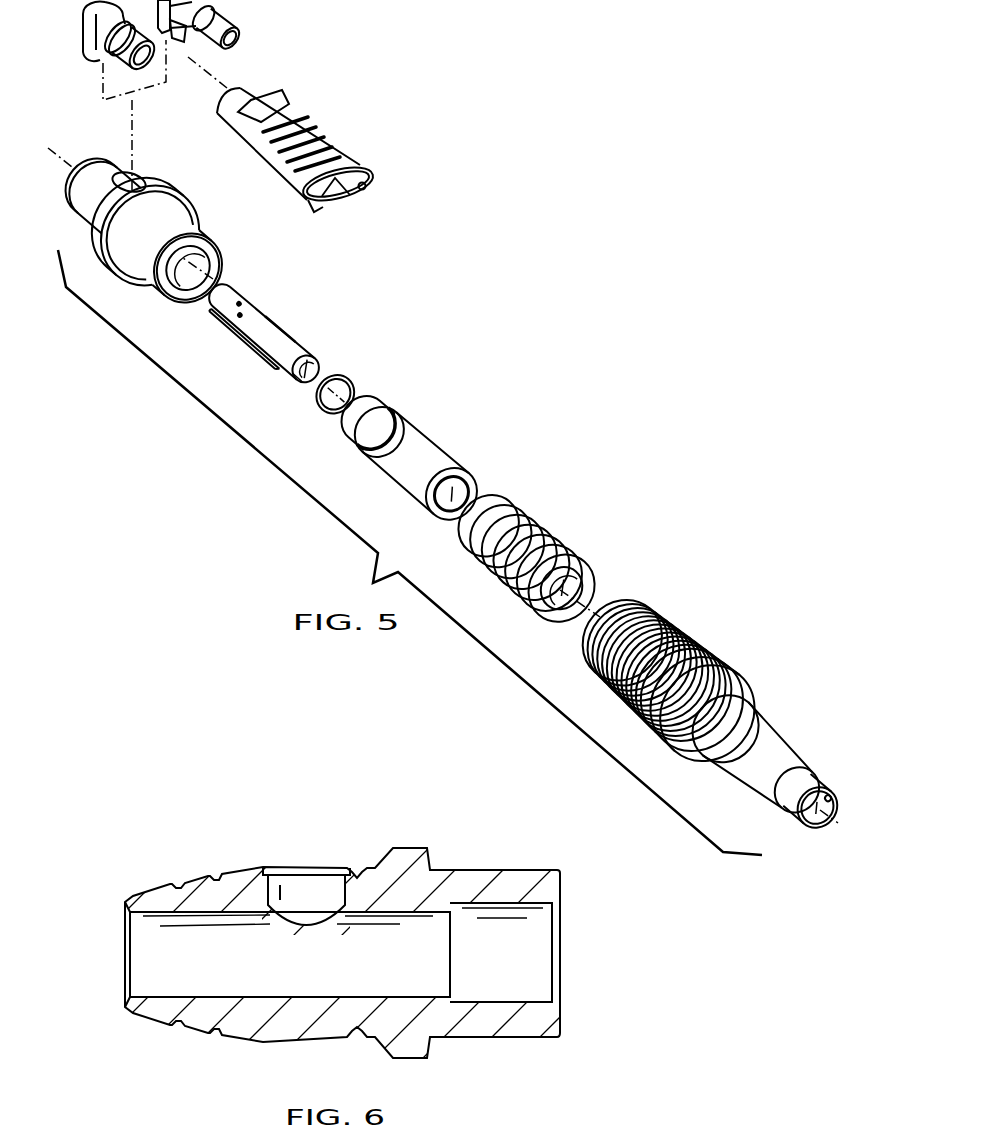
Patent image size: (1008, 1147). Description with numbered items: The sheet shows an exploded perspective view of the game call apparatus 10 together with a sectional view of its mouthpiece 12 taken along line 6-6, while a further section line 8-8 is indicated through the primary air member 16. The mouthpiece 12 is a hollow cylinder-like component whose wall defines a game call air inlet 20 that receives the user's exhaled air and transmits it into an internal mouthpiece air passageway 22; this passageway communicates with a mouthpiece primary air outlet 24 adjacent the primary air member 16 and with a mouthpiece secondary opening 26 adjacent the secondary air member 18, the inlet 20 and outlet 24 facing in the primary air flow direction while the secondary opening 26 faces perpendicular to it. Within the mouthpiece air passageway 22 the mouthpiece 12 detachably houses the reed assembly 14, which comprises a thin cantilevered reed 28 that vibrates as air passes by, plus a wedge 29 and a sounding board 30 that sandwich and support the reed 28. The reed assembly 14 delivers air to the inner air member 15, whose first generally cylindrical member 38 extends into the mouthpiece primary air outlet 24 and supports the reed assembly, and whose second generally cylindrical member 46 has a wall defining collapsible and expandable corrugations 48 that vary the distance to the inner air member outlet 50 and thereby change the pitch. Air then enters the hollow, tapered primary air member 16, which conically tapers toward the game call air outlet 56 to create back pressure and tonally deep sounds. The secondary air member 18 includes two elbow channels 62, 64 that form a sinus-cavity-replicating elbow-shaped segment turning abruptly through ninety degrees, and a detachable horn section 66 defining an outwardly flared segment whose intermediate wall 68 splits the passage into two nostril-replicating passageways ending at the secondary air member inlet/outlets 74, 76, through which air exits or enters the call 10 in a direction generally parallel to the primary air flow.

In FIG. 5, the section line 6- 6 is at (50, 150).
In FIG. 5, the section line 8- 8 is at (577, 603).
In FIG. 5, the game call apparatus 10 is at (588, 228).
In FIG. 5, the mouthpiece 12 is at (117, 270).
In FIG. 6, the mouthpiece 12 is at (190, 784).
In FIG. 5, the reed assembly 14 is at (270, 312).
In FIG. 5, the inner air member 15 is at (500, 469).
In FIG. 5, the primary air member 16 is at (730, 667).
In FIG. 5, the secondary air member 18 is at (338, 66).
In FIG. 6, the game call air inlet 20 is at (124, 933).
In FIG. 6, the mouthpiece air passageway 22 is at (266, 970).
In FIG. 5, the mouthpiece primary air outlet 24 is at (189, 284).
In FIG. 6, the mouthpiece primary air outlet 24 is at (560, 920).
In FIG. 5, the mouthpiece secondary opening 26 is at (143, 178).
In FIG. 6, the mouthpiece secondary opening 26 is at (284, 872).
In FIG. 5, the reed 28 is at (226, 314).
In FIG. 5, the wedge 29 is at (284, 372).
In FIG. 5, the sounding board 30 is at (293, 333).
In FIG. 5, the first generally cylindrical member 38 is at (419, 423).
In FIG. 5, the second generally cylindrical member 46 is at (541, 532).
In FIG. 5, the corrugations 48 is at (522, 598).
In FIG. 5, the inner air member outlet 50 is at (558, 604).
In FIG. 5, the game call air outlet 56 is at (834, 798).
In FIG. 5, the elbow channel 62 is at (85, 52).
In FIG. 5, the elbow channel 64 is at (230, 14).
In FIG. 5, the horn section 66 is at (356, 160).
In FIG. 5, the intermediate wall 68 is at (345, 192).
In FIG. 5, the secondary air member inlet/outlet 74 is at (311, 212).
In FIG. 5, the secondary air member inlet/outlet 76 is at (366, 190).